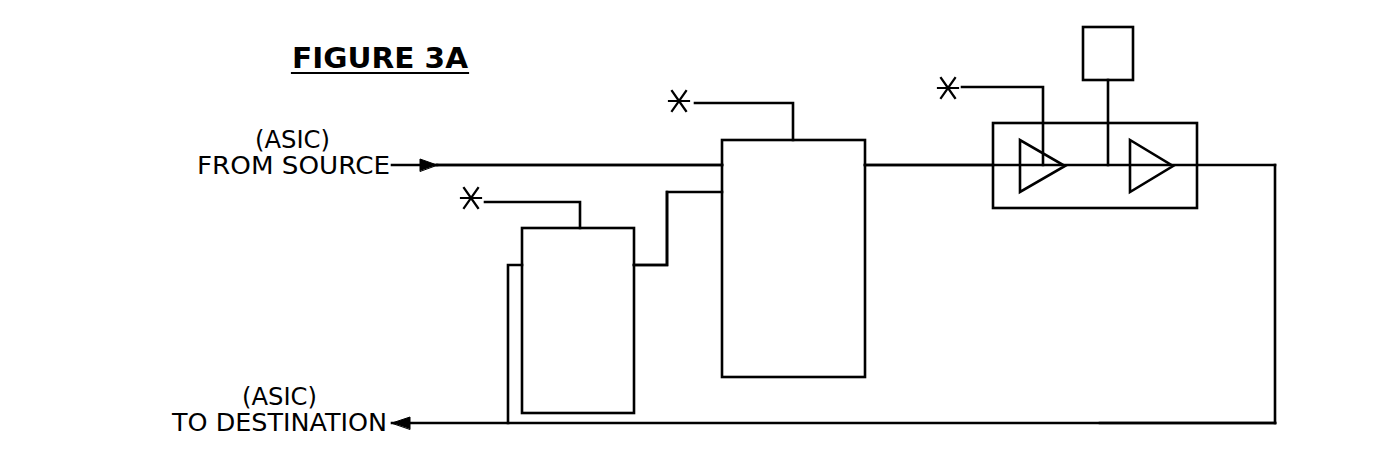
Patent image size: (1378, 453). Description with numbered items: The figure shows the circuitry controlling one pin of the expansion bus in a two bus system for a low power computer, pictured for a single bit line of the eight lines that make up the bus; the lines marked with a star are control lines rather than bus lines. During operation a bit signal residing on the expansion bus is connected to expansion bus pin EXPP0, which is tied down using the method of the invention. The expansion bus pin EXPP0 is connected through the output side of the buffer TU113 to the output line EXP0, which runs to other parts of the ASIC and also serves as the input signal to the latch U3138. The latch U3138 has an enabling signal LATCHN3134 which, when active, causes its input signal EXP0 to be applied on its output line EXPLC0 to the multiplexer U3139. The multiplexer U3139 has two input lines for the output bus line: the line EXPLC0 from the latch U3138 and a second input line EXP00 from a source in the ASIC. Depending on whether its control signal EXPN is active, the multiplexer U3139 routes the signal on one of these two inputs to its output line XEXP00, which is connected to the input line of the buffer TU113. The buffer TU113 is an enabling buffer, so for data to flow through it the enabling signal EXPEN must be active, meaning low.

The latch U3138 is at (578, 320).
The multiplexer U3139 is at (793, 258).
The buffer TU113 is at (1133, 208).
The second input line EXP00 is at (581, 165).
The enabling signal LATCHN3134 is at (603, 200).
The control signal EXPN is at (777, 103).
The output line EXPLC0 is at (660, 267).
The output line XEXP00 is at (913, 166).
The enabling signal EXPEN is at (1028, 87).
The expansion bus pin EXPP0 is at (1193, 88).
The output line EXP0 is at (1188, 423).